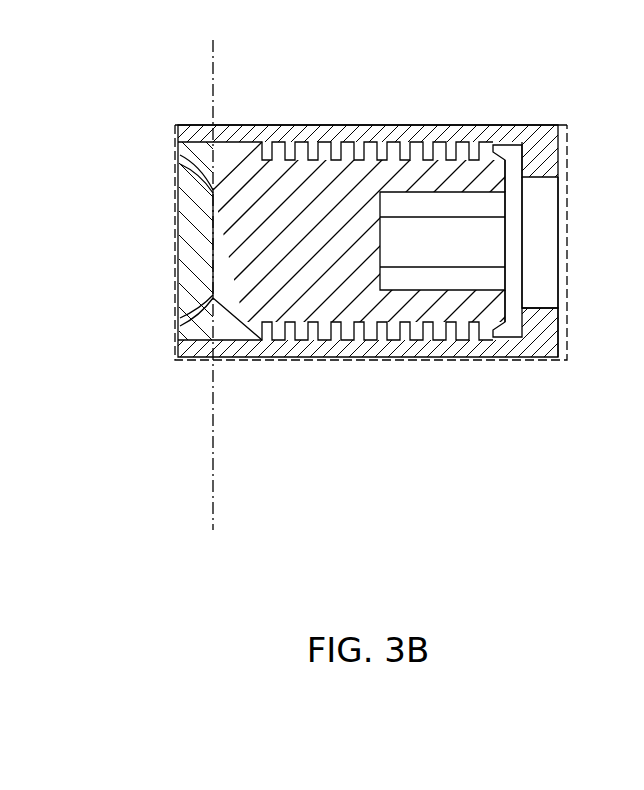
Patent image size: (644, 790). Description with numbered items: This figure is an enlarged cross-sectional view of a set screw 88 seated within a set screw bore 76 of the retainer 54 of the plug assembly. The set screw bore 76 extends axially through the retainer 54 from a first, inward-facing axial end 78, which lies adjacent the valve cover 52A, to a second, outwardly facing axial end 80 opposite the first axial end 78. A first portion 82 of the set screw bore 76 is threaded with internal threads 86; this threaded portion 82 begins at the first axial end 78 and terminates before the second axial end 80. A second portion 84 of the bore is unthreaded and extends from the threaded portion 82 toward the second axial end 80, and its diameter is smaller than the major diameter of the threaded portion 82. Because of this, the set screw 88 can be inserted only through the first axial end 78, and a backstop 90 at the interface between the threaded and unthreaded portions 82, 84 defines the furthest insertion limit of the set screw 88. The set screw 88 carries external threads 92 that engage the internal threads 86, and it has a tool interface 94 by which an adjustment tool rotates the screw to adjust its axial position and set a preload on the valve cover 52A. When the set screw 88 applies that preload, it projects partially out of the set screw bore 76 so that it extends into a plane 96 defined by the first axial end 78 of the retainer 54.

The valve cover 52A is at (195, 290).
The retainer 54 is at (435, 137).
The set screw bore 76 is at (543, 203).
The first axial end 78 is at (210, 360).
The second axial end 80 is at (558, 328).
The first portion 82 is at (298, 146).
The second portion 84 is at (535, 168).
The internal threads 86 is at (365, 148).
The set screw 88 is at (230, 211).
The backstop 90 is at (517, 320).
The external threads 92 is at (290, 330).
The tool interface 94 is at (503, 225).
The plane 96 is at (217, 487).